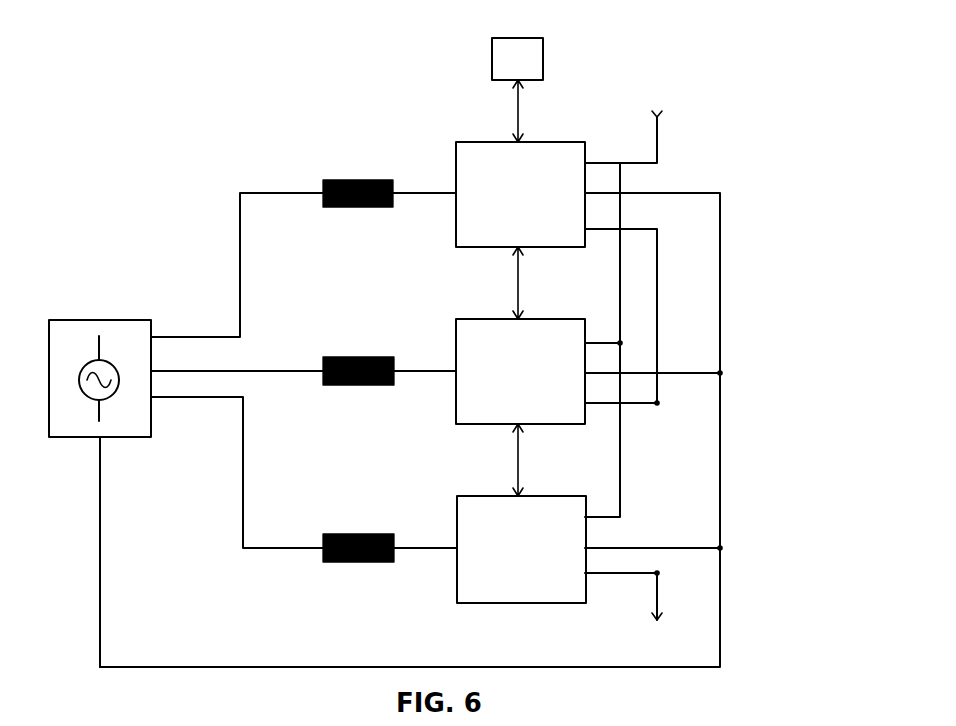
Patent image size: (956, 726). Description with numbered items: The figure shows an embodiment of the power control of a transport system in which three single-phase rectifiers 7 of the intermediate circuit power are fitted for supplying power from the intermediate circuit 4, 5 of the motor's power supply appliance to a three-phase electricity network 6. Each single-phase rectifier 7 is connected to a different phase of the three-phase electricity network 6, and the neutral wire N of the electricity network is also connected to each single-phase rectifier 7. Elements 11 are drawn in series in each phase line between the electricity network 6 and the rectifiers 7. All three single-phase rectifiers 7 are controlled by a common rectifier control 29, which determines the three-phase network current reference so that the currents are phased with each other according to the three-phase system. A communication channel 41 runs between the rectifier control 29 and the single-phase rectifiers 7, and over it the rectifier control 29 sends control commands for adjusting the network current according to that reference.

The three-phase electricity network 6 is at (96, 320).
The neutral wire N is at (85, 552).
The current sensor / fuse element 11 is at (358, 180).
The single-phase rectifier of the intermediate circuit power 7 is at (545, 142).
The rectifier control 29 is at (544, 58).
The communication channel 41 is at (518, 280).
The intermediate circuit 4 is at (658, 101).
The intermediate circuit 5 is at (659, 637).